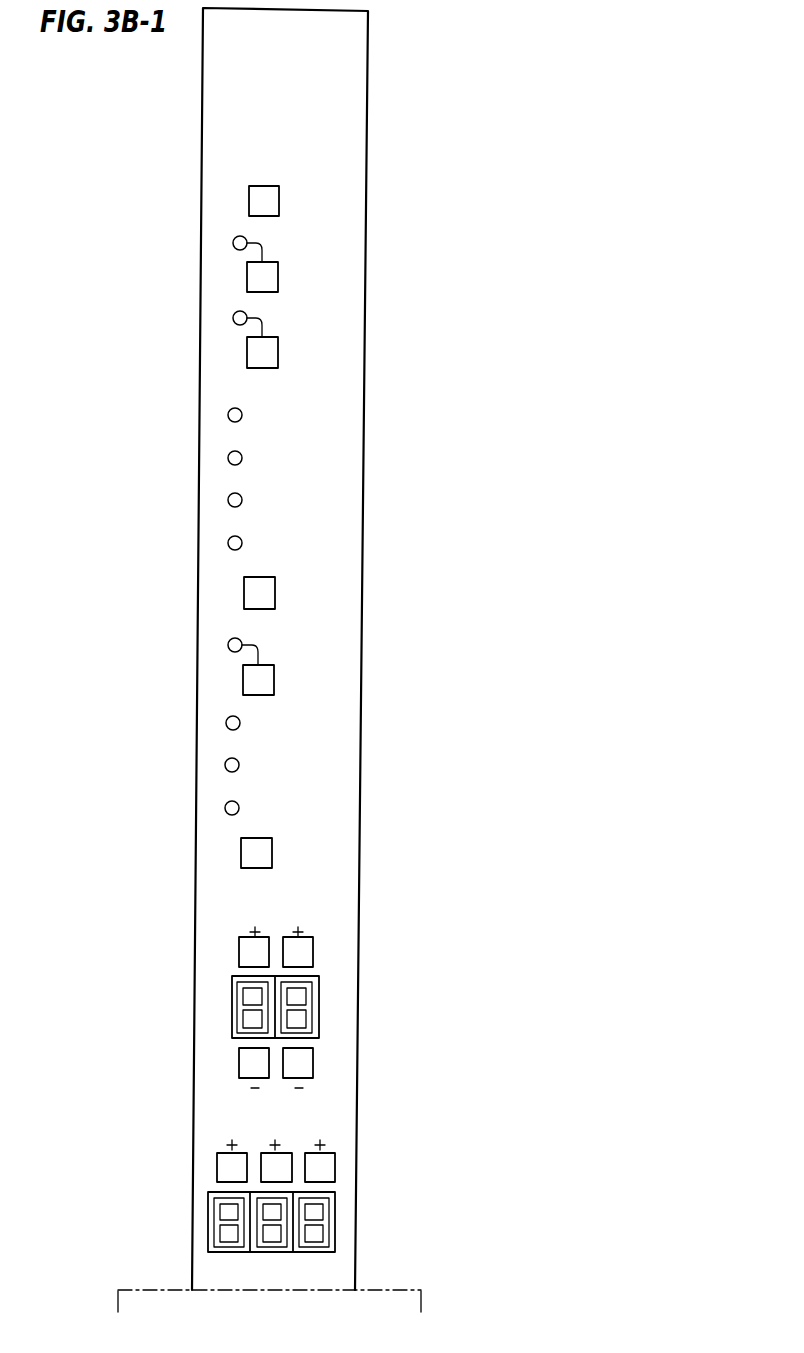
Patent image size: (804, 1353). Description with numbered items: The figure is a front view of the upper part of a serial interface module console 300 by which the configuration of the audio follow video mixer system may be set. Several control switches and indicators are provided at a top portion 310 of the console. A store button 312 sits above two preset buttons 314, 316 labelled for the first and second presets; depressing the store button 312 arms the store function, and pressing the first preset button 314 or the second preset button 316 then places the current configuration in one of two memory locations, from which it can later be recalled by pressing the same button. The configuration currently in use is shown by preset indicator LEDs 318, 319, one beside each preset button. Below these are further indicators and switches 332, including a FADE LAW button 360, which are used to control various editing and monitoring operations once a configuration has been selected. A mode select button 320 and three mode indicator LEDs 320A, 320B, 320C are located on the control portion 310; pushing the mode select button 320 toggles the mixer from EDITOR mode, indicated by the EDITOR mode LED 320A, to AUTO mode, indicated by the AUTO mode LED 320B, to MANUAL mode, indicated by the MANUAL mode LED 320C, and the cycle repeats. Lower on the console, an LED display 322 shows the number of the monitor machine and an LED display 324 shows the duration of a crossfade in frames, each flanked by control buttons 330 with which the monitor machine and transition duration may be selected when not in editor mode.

The serial interface module console 300 is at (452, 91).
The top portion 310 is at (388, 668).
The store button 312 is at (345, 199).
The preset 1 button 314 is at (343, 293).
The preset 2 button 316 is at (342, 366).
The preset 1 indicator LED 318 is at (233, 243).
The preset 2 indicator LED 319 is at (233, 318).
The remaining buttons, switches and indicators 332 is at (228, 416).
The FADE LAW button 360 is at (228, 593).
The EDITOR mode LED 320A is at (226, 723).
The AUTO mode LED indicator 320B is at (225, 765).
The MANUAL mode LED indicator 320C is at (225, 808).
The mode select button 320 is at (358, 852).
The LED display 322 is at (357, 1010).
The LED display 324 is at (355, 1226).
The control buttons 330 is at (239, 1062).